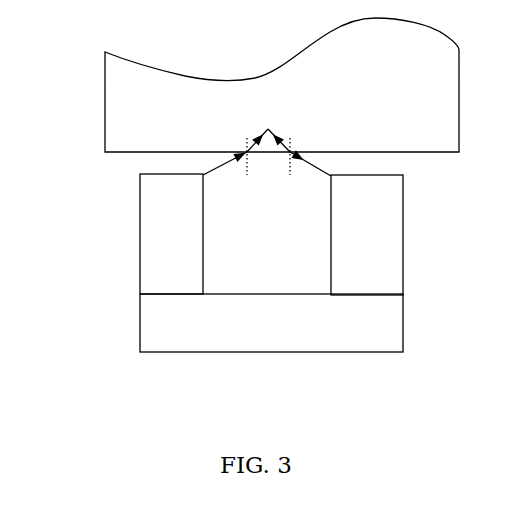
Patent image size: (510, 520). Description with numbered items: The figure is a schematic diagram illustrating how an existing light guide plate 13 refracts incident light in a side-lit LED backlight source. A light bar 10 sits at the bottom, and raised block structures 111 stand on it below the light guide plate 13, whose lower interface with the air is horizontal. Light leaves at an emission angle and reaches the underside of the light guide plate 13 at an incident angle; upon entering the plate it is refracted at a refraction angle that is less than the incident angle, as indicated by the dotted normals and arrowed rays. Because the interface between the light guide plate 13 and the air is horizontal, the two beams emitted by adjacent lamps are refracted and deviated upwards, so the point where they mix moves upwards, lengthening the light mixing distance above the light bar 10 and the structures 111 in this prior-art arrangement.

The light guide plate 13 is at (260, 85).
The protrusion structures 111 is at (232, 234).
The light bar 10 is at (232, 323).